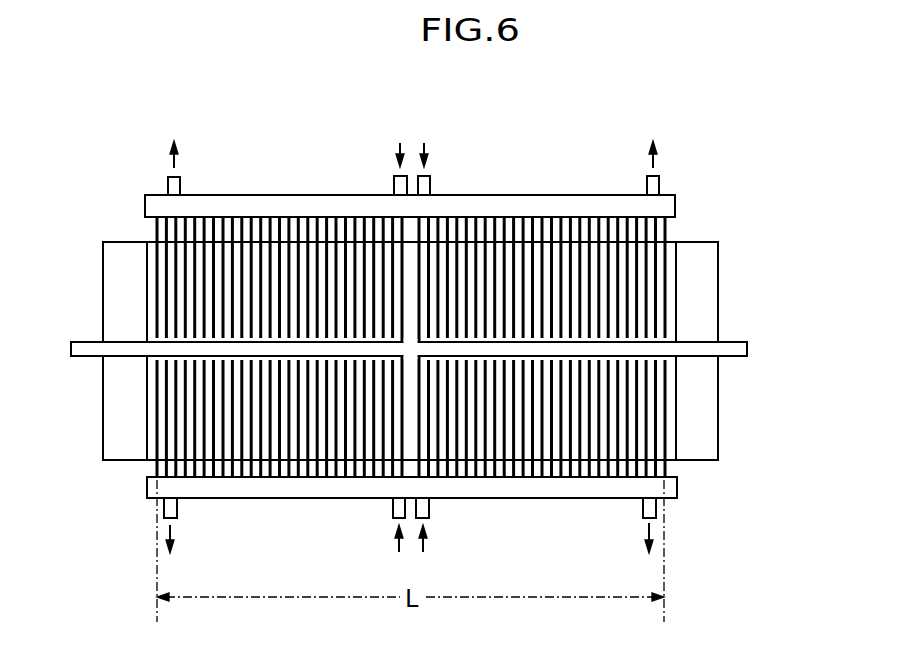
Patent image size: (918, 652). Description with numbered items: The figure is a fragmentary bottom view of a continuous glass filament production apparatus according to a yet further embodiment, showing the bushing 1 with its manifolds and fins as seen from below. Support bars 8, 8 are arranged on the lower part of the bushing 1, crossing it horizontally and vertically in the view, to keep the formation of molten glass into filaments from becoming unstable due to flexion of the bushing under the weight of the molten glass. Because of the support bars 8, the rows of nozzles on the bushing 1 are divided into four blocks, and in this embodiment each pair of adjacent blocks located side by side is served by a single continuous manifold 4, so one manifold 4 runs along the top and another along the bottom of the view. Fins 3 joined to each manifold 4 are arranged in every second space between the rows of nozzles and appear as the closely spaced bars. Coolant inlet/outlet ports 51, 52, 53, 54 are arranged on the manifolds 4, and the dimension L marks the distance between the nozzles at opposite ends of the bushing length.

The bushing 1 is at (705, 312).
The fins 3 is at (667, 228).
The manifold 4 is at (162, 208).
The support bar 8 is at (733, 350).
The coolant inlet/outlet port 51 is at (168, 186).
The coolant inlet/outlet port 52 is at (394, 186).
The coolant inlet/outlet port 53 is at (431, 181).
The coolant inlet/outlet port 54 is at (660, 185).